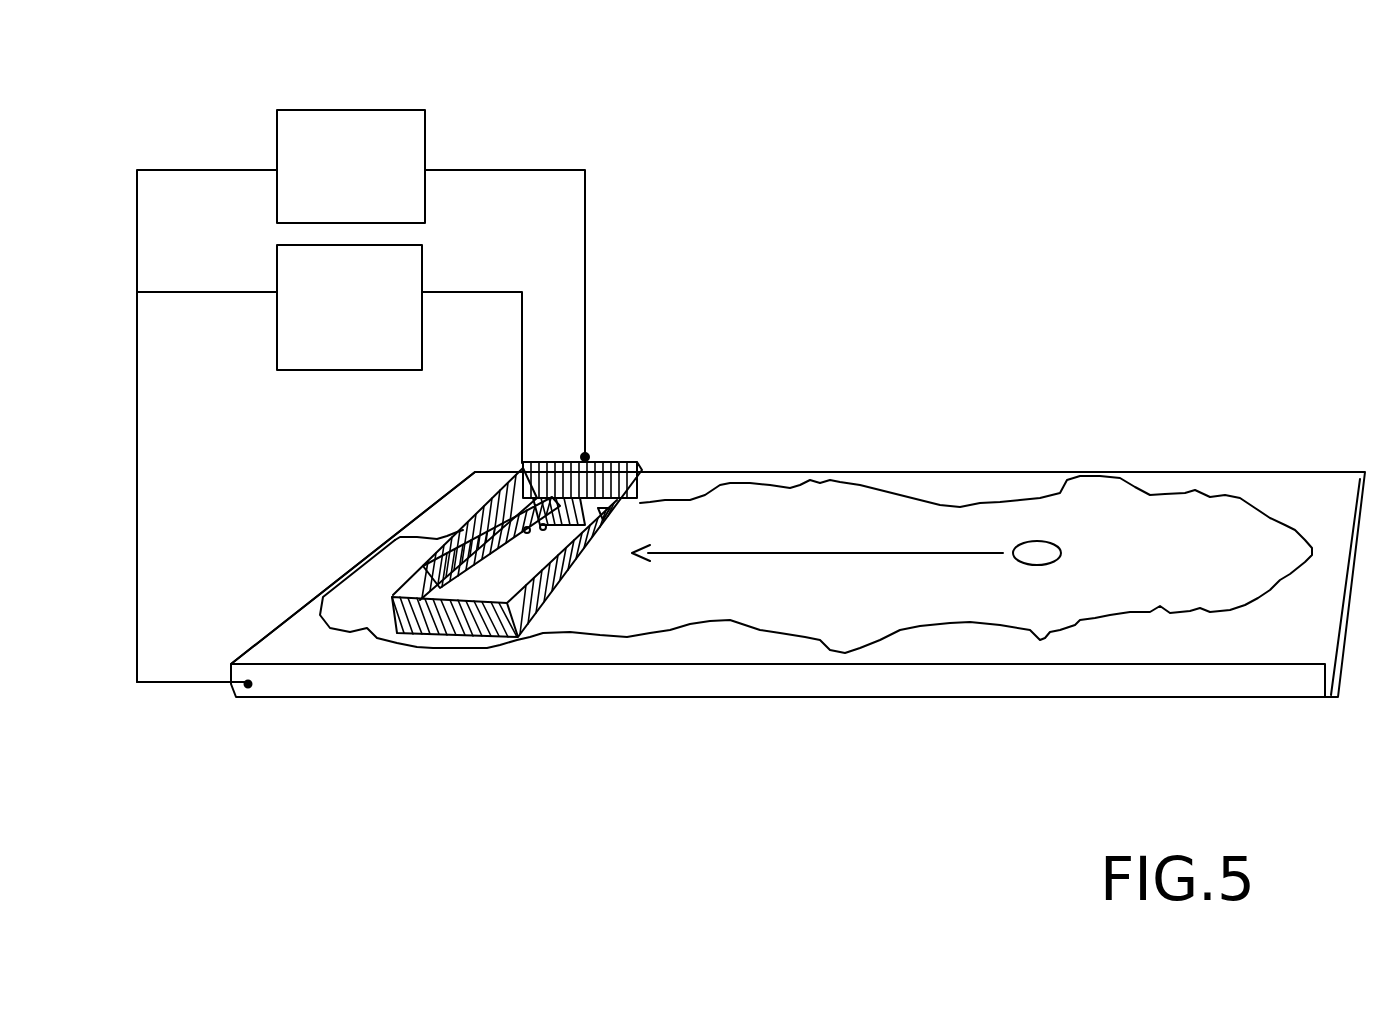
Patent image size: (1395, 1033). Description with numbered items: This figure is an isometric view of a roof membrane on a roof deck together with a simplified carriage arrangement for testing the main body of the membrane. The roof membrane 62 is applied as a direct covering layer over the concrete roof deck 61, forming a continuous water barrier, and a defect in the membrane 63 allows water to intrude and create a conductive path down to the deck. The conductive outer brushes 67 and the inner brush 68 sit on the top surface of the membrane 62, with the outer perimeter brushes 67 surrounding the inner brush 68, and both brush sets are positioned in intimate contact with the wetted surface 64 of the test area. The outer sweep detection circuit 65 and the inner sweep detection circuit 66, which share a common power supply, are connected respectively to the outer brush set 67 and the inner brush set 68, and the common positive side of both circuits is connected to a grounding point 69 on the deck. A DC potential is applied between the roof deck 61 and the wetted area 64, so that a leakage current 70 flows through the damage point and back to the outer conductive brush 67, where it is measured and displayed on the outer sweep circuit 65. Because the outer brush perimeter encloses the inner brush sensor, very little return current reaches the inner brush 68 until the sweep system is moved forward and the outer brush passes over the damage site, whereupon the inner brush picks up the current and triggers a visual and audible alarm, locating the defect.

The roof deck 61 is at (588, 700).
The roof membrane 62 is at (280, 648).
The defect in the membrane 63 is at (1043, 542).
The wetted surface 64 is at (829, 518).
The outer sweep detection circuit 65 is at (403, 110).
The inner sweep detection circuit 66 is at (277, 323).
The outer conductive brushes 67 is at (597, 467).
The inner brush 68 is at (524, 528).
The grounding point 69 is at (248, 684).
The leakage current 70 is at (876, 557).